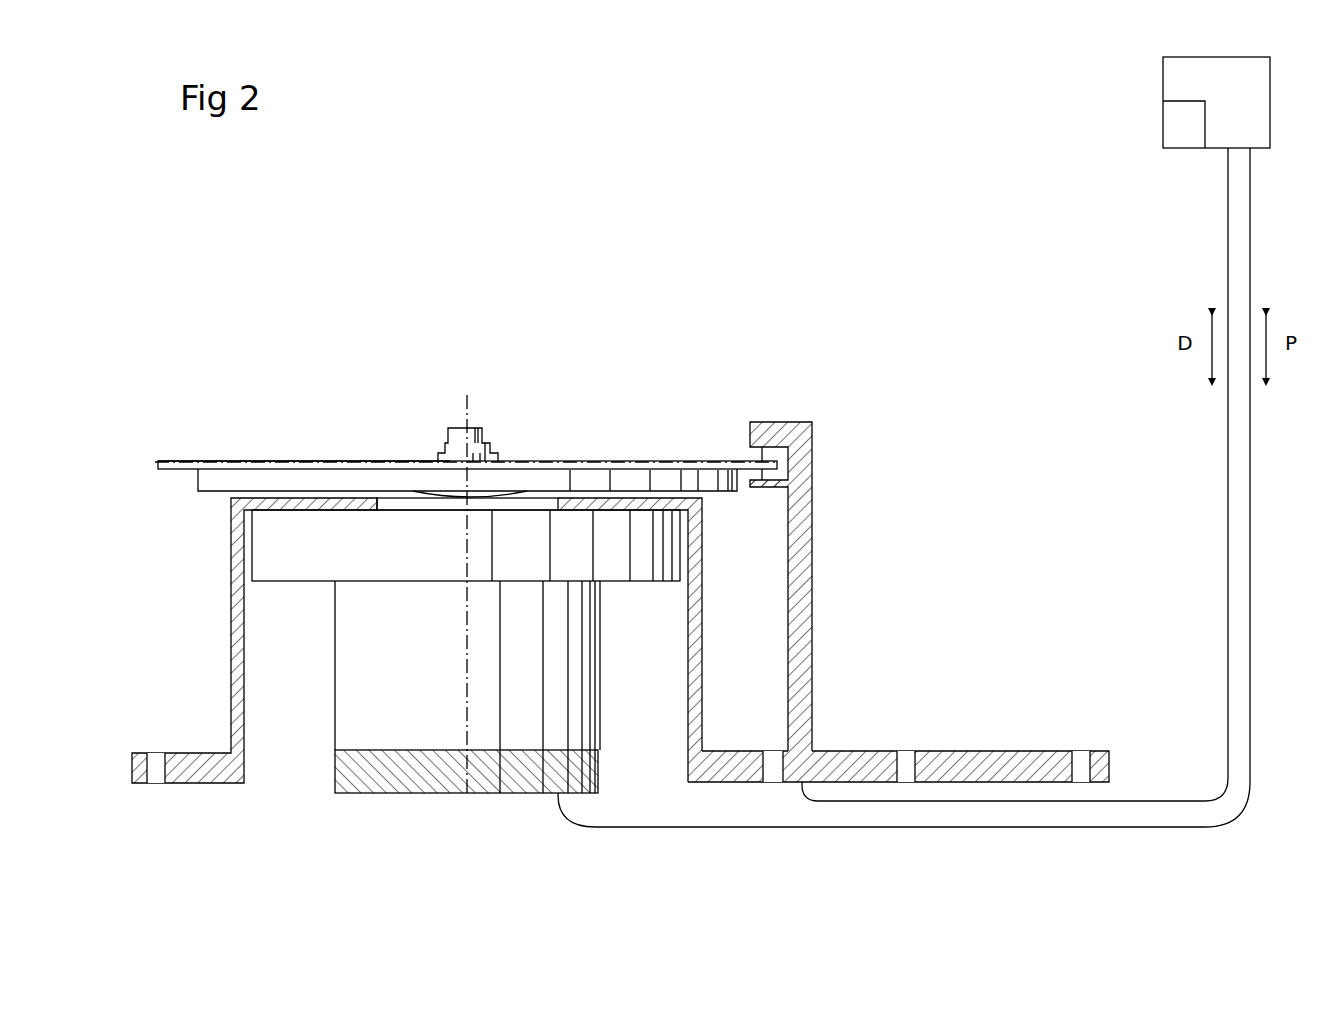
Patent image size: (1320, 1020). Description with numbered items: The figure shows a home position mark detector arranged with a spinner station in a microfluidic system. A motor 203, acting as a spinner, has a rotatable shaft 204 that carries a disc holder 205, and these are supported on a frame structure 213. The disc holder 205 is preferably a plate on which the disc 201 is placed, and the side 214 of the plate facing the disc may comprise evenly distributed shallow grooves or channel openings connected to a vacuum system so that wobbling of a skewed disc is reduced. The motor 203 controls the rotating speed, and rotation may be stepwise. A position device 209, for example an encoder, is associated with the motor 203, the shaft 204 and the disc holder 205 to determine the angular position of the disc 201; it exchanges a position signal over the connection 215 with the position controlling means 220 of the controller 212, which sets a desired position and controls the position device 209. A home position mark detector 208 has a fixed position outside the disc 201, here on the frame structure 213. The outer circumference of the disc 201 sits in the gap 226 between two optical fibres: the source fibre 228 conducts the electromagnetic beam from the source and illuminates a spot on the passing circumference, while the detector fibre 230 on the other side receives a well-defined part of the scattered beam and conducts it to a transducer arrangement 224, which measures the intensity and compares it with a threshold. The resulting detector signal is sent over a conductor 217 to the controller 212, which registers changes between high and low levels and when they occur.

The disc 201 is at (297, 462).
The motor 203 is at (578, 698).
The rotatable shaft 204 is at (448, 428).
The disc holder 205 is at (215, 486).
The home position mark detector 208 is at (813, 446).
The position device 209 is at (458, 772).
The controller 212 is at (1197, 80).
The frame structure 213 is at (853, 752).
The side of the plate facing the disc 214 is at (277, 466).
The connection 215 is at (625, 828).
The conductor 217 is at (1227, 560).
The position controlling means 220 is at (1183, 124).
The transducer arrangement 224 is at (775, 484).
The gap 226 is at (788, 467).
The source fibre 228 is at (767, 456).
The detector fibre 230 is at (756, 471).